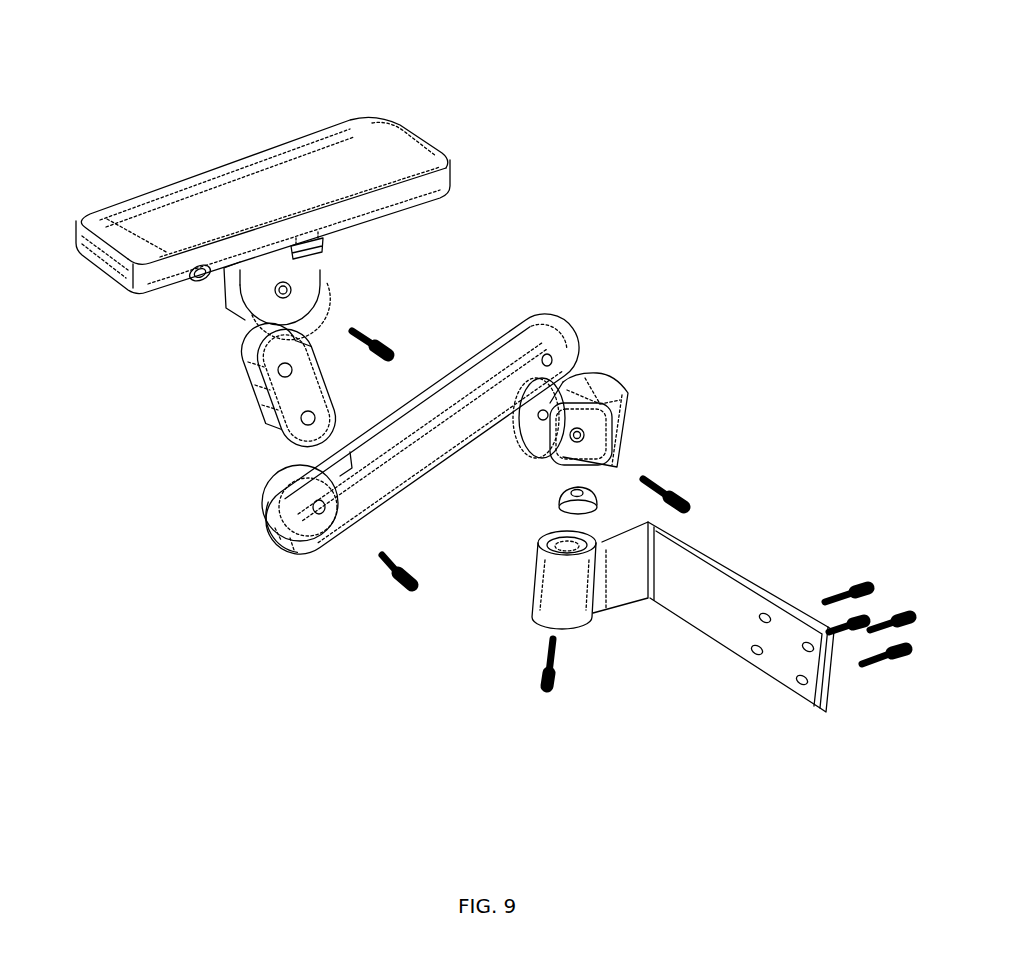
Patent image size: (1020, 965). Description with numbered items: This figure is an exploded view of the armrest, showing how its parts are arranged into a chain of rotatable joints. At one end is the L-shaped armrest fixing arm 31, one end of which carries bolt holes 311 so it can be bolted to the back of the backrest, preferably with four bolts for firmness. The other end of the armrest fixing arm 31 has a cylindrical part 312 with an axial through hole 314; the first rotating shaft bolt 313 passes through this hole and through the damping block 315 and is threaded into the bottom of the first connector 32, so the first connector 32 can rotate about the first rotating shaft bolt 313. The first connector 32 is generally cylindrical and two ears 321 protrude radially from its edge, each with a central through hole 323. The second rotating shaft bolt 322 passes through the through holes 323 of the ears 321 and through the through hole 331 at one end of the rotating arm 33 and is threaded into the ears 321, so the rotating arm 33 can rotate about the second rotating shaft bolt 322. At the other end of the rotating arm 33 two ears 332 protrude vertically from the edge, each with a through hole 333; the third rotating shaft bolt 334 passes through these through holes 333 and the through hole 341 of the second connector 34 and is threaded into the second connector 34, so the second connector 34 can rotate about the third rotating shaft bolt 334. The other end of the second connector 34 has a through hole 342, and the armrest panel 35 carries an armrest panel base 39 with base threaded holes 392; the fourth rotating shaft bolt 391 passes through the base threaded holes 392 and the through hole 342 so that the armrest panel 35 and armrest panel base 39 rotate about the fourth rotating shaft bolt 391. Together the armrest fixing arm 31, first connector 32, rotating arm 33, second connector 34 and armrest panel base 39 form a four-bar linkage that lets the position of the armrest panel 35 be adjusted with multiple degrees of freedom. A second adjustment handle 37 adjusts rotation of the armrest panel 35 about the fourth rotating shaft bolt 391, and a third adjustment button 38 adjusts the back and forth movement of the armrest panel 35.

The armrest fixing arm 31 is at (690, 640).
The bolt holes 311 is at (758, 656).
The cylindrical part 312 is at (533, 600).
The first rotating shaft bolt 313 is at (565, 663).
The axial through hole 314 is at (562, 547).
The damping block 315 is at (558, 503).
The first connector 32 is at (620, 380).
The ears 321 is at (540, 452).
The second rotating shaft bolt 322 is at (667, 480).
The through holes 323 is at (585, 435).
The rotating arm 33 is at (511, 325).
The through hole 331 is at (550, 354).
The ears 332 is at (263, 492).
The through holes 333 is at (319, 515).
The third rotating shaft bolt 334 is at (390, 580).
The second connector 34 is at (250, 398).
The through hole 341 is at (302, 422).
The through hole 342 is at (278, 370).
The armrest panel 35 is at (276, 140).
The second adjustment handle 37 is at (323, 242).
The third adjustment button 38 is at (230, 270).
The armrest panel base 39 is at (320, 290).
The fourth rotating shaft bolt 391 is at (365, 327).
The base threaded holes 392 is at (275, 290).